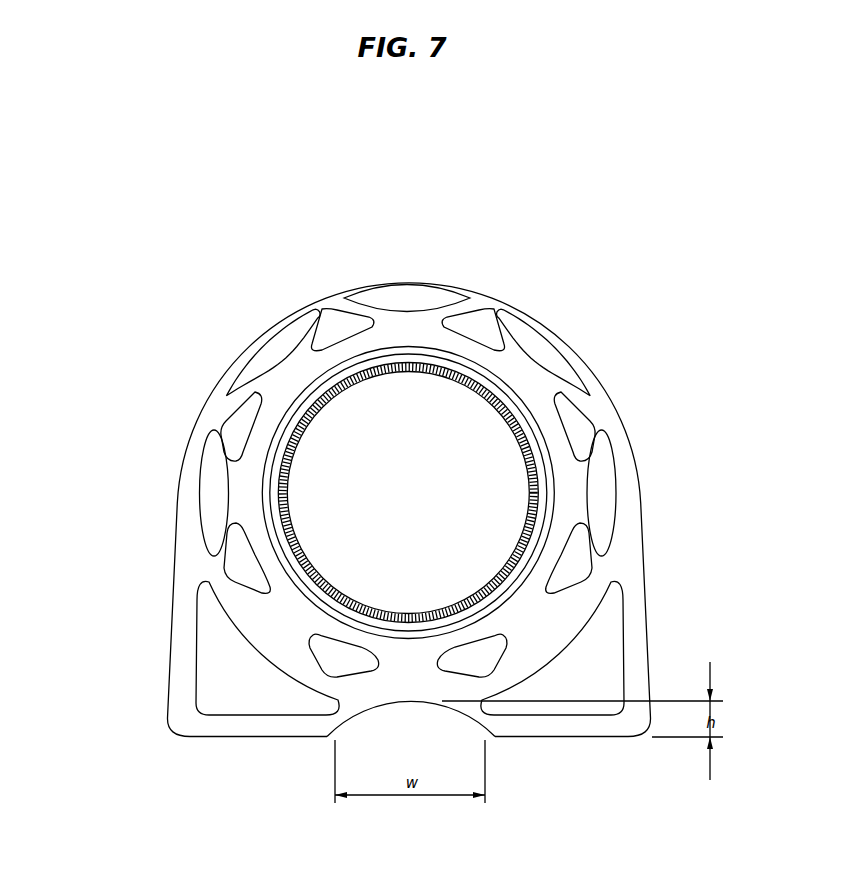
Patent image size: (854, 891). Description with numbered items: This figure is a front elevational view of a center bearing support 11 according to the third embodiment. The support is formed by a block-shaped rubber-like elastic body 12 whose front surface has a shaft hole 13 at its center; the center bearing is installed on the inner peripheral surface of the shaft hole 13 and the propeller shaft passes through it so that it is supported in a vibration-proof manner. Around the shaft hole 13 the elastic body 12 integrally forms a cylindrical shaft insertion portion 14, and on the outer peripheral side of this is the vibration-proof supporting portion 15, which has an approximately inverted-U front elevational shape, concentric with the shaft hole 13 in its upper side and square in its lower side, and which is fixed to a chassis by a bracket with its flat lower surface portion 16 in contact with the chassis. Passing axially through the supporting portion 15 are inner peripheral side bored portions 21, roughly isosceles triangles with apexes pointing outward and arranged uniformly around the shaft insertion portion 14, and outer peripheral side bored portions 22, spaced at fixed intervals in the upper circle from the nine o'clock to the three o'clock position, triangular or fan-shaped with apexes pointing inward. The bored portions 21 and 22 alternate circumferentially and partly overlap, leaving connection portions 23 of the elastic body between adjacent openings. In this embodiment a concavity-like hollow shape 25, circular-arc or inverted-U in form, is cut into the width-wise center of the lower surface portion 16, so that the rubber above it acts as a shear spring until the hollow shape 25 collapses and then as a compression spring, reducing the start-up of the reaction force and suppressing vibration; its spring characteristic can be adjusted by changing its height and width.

The center bearing support 11 is at (630, 384).
The rubber-like elastic body 12 is at (628, 492).
The shaft hole 13 is at (327, 522).
The shaft insertion portion 14 is at (270, 507).
The vibration-proof supporting portion 15 is at (192, 467).
The lower surface portion 16 is at (527, 738).
The inner peripheral side bored portions 21 is at (333, 320).
The outer peripheral side bored portions 22 is at (268, 357).
The connection portions 23 is at (402, 264).
The concavity-like hollow shape 25 is at (411, 702).